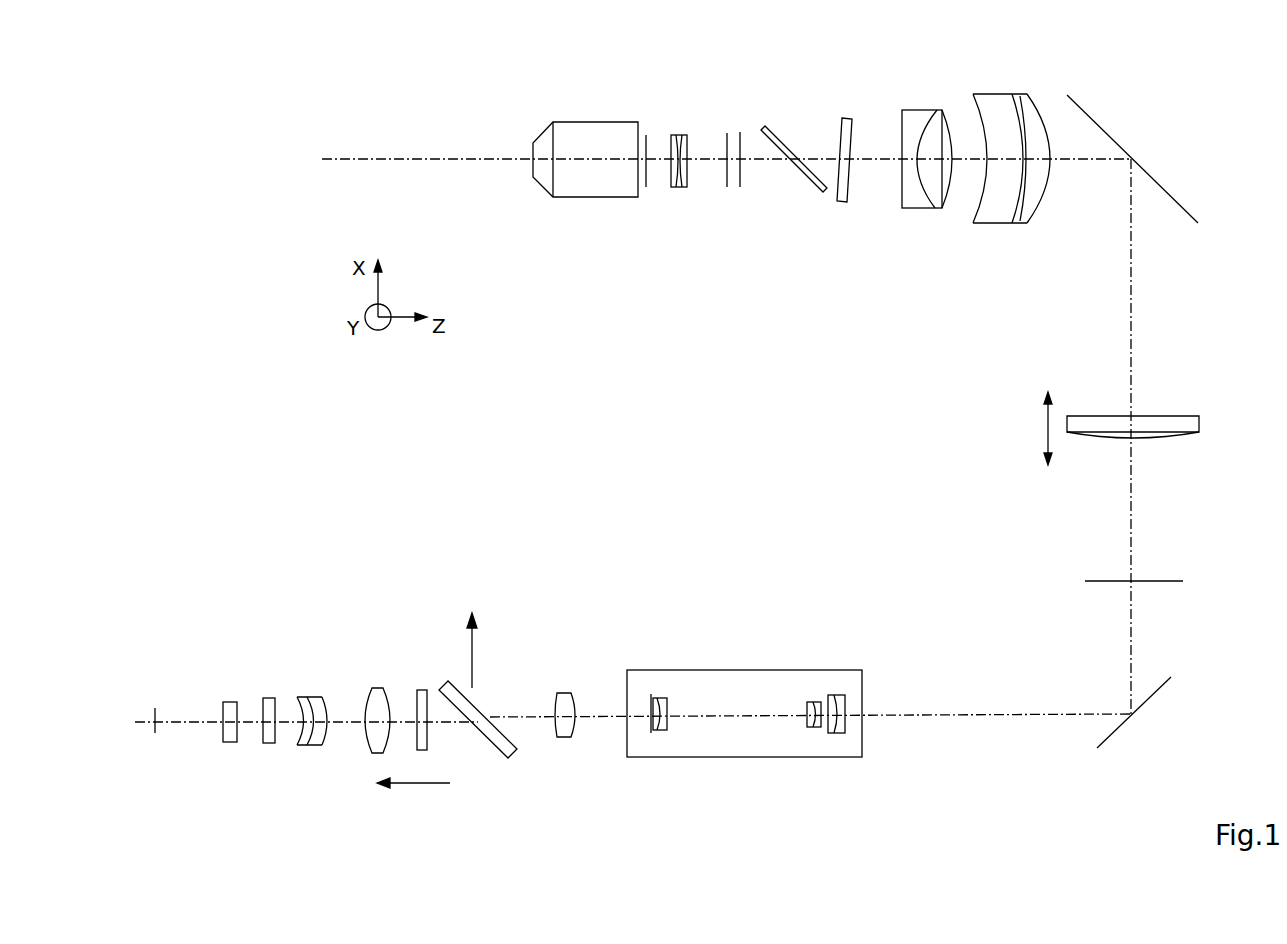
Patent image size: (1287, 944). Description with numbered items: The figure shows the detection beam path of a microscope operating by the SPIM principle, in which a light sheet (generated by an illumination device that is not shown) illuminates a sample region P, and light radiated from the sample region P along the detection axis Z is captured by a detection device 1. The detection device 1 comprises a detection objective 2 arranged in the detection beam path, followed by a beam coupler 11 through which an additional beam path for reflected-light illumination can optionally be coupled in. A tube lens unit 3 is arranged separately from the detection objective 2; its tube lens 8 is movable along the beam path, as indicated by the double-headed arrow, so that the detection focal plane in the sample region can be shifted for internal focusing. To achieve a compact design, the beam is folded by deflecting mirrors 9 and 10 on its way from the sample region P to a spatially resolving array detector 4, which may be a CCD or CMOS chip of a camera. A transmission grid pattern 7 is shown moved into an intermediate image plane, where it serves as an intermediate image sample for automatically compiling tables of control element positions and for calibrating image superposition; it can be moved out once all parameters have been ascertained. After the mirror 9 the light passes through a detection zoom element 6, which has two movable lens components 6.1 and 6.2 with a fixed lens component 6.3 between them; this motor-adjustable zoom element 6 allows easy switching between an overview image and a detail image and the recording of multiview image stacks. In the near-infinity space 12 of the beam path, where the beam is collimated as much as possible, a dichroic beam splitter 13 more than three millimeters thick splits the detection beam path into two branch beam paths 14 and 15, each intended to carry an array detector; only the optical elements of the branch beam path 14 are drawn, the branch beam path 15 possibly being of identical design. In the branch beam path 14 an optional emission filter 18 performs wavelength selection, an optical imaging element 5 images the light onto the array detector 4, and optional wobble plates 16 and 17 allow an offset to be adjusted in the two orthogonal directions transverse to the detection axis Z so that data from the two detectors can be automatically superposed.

The detection device 1 is at (285, 214).
The sample region P is at (457, 159).
The detection objective 2 is at (717, 187).
The tube lens unit 3 is at (1027, 440).
The spatially resolving array detector 4 is at (155, 713).
The optical imaging element 5 is at (398, 675).
The detection zoom element 6 is at (757, 675).
The movable lens component 6.1 is at (668, 705).
The movable lens component 6.2 is at (843, 703).
The fixed lens component 6.3 is at (813, 702).
The transmission grid pattern 7 is at (1107, 582).
The tube lens 8 is at (1103, 438).
The deflecting mirror 9 is at (1162, 685).
The deflecting mirror 10 is at (1153, 177).
The beam coupler 11 is at (802, 175).
The near-infinity space 12 is at (525, 715).
The dichroic beam splitter 13 is at (508, 755).
The branch beam path 14 is at (413, 799).
The branch beam path 15 is at (472, 637).
The wobble plate 16 is at (225, 702).
The wobble plate 17 is at (265, 698).
The emission filter 18 is at (422, 690).